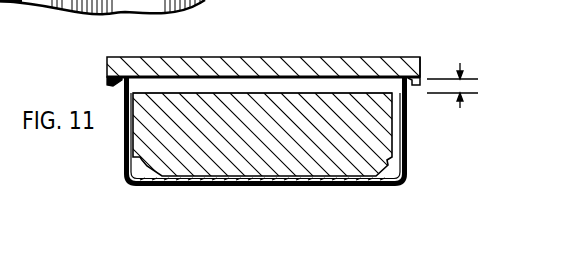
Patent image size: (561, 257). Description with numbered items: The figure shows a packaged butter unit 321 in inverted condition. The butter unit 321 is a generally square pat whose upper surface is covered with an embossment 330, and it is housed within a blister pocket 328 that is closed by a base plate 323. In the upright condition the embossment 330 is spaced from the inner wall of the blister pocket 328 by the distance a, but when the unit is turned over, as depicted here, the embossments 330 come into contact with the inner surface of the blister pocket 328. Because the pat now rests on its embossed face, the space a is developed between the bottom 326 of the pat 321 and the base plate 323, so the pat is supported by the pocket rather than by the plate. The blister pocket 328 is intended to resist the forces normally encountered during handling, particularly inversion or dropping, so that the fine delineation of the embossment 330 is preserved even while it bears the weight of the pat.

The butter unit 321 is at (381, 136).
The base plate 323 is at (247, 70).
The bottom of the pat 326 is at (345, 93).
The blister pocket 328 is at (313, 189).
The embossment 330 is at (197, 182).
The distance a is at (460, 85).